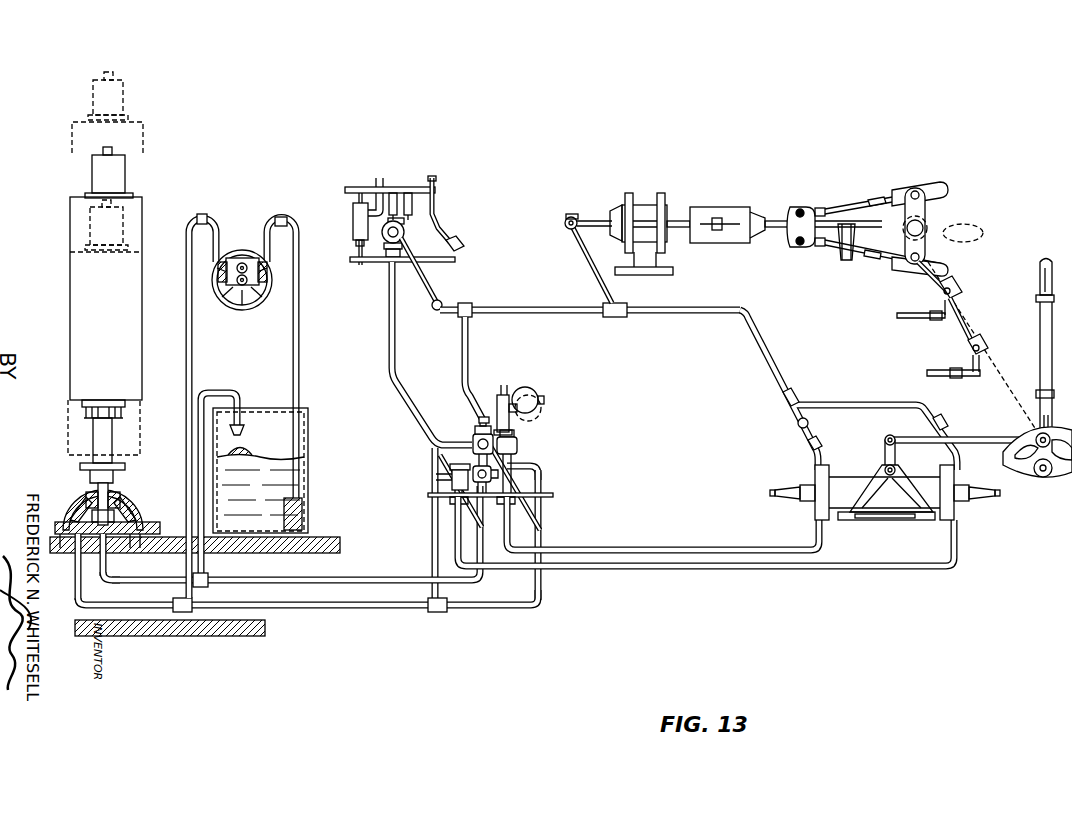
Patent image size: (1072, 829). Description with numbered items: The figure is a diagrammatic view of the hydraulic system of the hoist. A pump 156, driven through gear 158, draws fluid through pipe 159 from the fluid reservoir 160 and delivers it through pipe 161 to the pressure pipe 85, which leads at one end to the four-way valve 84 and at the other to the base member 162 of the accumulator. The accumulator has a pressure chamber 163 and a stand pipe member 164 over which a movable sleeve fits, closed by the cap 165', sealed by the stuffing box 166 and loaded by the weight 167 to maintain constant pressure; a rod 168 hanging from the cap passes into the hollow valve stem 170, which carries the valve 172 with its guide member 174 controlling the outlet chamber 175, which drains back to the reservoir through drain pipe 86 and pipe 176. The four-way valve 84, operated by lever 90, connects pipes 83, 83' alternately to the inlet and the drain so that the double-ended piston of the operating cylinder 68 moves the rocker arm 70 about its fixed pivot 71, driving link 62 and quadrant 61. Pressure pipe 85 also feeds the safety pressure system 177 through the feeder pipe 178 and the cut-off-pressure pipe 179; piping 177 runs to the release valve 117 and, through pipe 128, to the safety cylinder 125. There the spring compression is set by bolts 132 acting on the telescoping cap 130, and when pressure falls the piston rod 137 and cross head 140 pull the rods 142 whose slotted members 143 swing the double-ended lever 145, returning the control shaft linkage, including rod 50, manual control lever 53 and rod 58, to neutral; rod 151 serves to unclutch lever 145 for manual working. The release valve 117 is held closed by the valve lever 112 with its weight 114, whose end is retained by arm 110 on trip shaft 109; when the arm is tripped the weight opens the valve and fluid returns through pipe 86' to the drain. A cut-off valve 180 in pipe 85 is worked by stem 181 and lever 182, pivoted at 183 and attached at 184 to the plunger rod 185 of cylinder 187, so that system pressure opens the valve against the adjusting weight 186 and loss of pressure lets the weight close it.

The rod 168 is at (110, 150).
The cap 165' is at (123, 172).
The weight 167 is at (106, 298).
The stuffing box 166 is at (126, 408).
The stand pipe member 164 is at (100, 430).
The valve 172 is at (113, 506).
The base member 162 is at (93, 514).
The hollow valve stem 170 is at (112, 496).
The pressure chamber 163 is at (136, 510).
The guide member 174 is at (83, 540).
The outlet chamber 175 is at (107, 540).
The pipe 176 is at (106, 576).
The pressure pipe 85 is at (562, 456).
The drain pipe 86 is at (350, 543).
The pipe 86' is at (417, 353).
The gear 158 is at (240, 255).
The pump 156 is at (262, 270).
The pipe 159 is at (302, 304).
The pipe 161 is at (192, 320).
The fluid reservoir 160 is at (302, 461).
The weight 114 is at (353, 218).
The valve lever 112 is at (404, 187).
The arm 110 is at (441, 216).
The trip shaft 109 is at (457, 243).
The release valve 117 is at (404, 232).
The safety pressure system 177 is at (566, 313).
The cut-off-pressure pipe 179 is at (468, 345).
The pipe 128 is at (576, 246).
The cylinder member 125 is at (645, 204).
The bolts 132 is at (681, 218).
The telescoping cap 130 is at (720, 243).
The piston rod 137 is at (795, 213).
The cross head 140 is at (800, 243).
The rods 142 is at (852, 204).
The slotted members 143 is at (906, 188).
The double-ended lever 145 is at (927, 211).
The rod 151 is at (963, 233).
The rod 50 is at (915, 316).
The manual control lever 53 is at (1040, 313).
The rod 58 is at (938, 377).
The link 62 is at (966, 436).
The rocker arm 70 is at (885, 447).
The fixed pivot 71 is at (895, 469).
The operating cylinder 68 is at (939, 484).
The quadrant 61 is at (1033, 472).
The pipe 83 is at (663, 523).
The pipe 83' is at (678, 531).
The feeder pipe 178 is at (496, 604).
The stem 181 is at (478, 424).
The cut-off valve 180 is at (474, 437).
The pivot 183 is at (484, 416).
The lever 182 is at (503, 395).
The attachment point 184 is at (522, 390).
The adjusting weight 186 is at (542, 398).
The plunger rod 185 is at (516, 412).
The cylinder 187 is at (518, 444).
The four-way valve 84 is at (450, 476).
The lever 90 is at (474, 468).